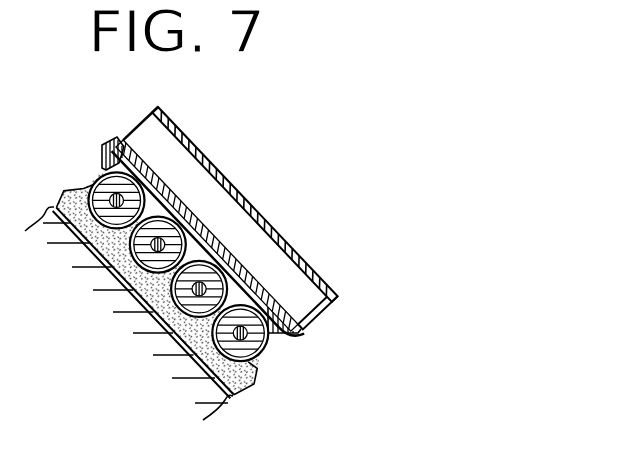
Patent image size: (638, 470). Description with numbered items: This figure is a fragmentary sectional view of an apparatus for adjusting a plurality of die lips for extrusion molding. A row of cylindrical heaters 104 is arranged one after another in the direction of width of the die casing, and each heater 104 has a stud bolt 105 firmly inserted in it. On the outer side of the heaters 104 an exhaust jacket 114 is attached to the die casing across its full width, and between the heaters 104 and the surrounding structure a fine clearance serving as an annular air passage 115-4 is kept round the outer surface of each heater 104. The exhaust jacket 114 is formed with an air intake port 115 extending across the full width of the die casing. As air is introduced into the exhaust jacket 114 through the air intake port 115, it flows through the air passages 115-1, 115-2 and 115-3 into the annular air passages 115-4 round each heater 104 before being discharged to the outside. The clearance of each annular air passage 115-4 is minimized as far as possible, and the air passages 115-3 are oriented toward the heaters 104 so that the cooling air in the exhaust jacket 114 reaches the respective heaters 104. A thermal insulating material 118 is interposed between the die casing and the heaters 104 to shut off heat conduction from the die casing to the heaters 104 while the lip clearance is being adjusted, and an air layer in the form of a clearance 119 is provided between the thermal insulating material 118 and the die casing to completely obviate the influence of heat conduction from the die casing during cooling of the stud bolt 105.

The cylindrical heater 104 is at (255, 355).
The stud bolt 105 is at (192, 357).
The exhaust jacket 114 is at (226, 232).
The air intake port 115 is at (273, 229).
The air passage 115-1 is at (293, 253).
The air passage 115-2 is at (287, 273).
The air passage 115-3 is at (294, 307).
The annular air passage 115-4 is at (302, 338).
The thermal insulating material 118 is at (152, 295).
The clearance 119 is at (100, 253).